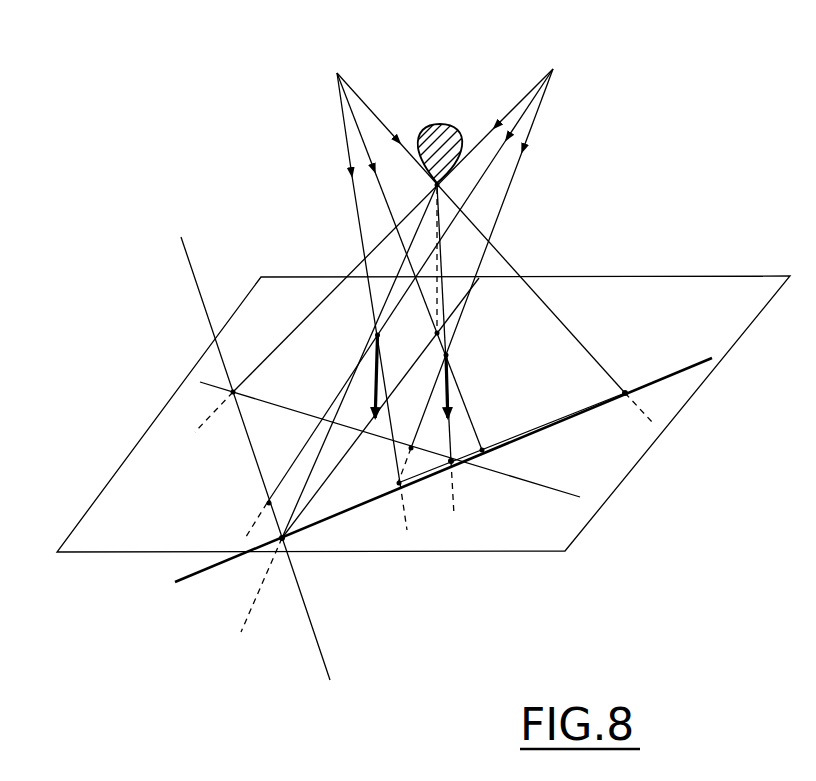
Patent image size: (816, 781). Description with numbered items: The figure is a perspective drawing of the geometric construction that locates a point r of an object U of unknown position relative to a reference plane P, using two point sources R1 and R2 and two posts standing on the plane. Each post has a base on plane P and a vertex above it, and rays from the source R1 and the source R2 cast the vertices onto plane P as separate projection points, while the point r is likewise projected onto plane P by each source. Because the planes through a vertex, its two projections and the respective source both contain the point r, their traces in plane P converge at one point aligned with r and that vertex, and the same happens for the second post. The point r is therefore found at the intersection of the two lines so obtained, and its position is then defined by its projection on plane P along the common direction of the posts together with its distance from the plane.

The plane P is at (81, 560).
The first point source R1 is at (391, 291).
The second point source R2 is at (487, 286).
The object U is at (450, 118).
The point of the object r is at (350, 404).